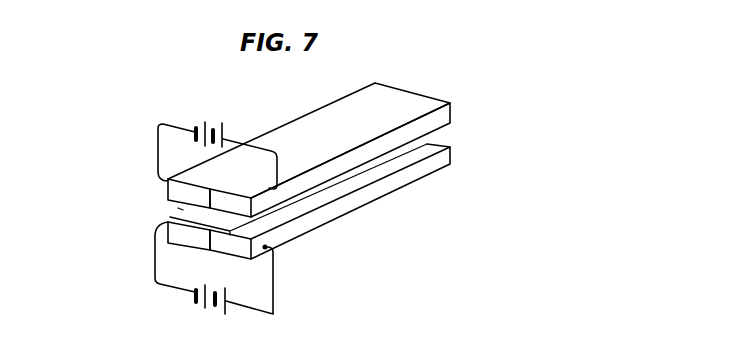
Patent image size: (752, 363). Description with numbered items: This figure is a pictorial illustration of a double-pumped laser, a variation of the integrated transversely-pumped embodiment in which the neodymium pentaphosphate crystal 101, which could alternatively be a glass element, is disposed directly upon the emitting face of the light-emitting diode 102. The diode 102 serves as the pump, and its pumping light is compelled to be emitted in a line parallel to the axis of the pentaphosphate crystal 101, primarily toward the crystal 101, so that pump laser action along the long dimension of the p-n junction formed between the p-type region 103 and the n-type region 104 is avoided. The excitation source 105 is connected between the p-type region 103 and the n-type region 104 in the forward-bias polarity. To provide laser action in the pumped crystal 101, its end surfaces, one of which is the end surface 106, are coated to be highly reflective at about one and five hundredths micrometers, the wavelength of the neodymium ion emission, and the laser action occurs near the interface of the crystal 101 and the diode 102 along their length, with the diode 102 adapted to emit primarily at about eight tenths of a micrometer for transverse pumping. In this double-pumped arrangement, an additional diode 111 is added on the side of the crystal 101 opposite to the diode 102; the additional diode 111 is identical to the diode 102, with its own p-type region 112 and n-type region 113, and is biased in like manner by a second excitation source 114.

The neodymium pentaphosphate crystal 101 is at (432, 134).
The light-emitting diode 102 is at (378, 190).
The p-type region 103 is at (203, 246).
The n-type region 104 is at (248, 260).
The excitation source 105 is at (202, 306).
The end surface 106 is at (197, 207).
The additional diode 111 is at (289, 132).
The p-type region of upper body 112 is at (176, 178).
The n-type region of upper body 113 is at (252, 198).
The excitation source 114 is at (216, 122).